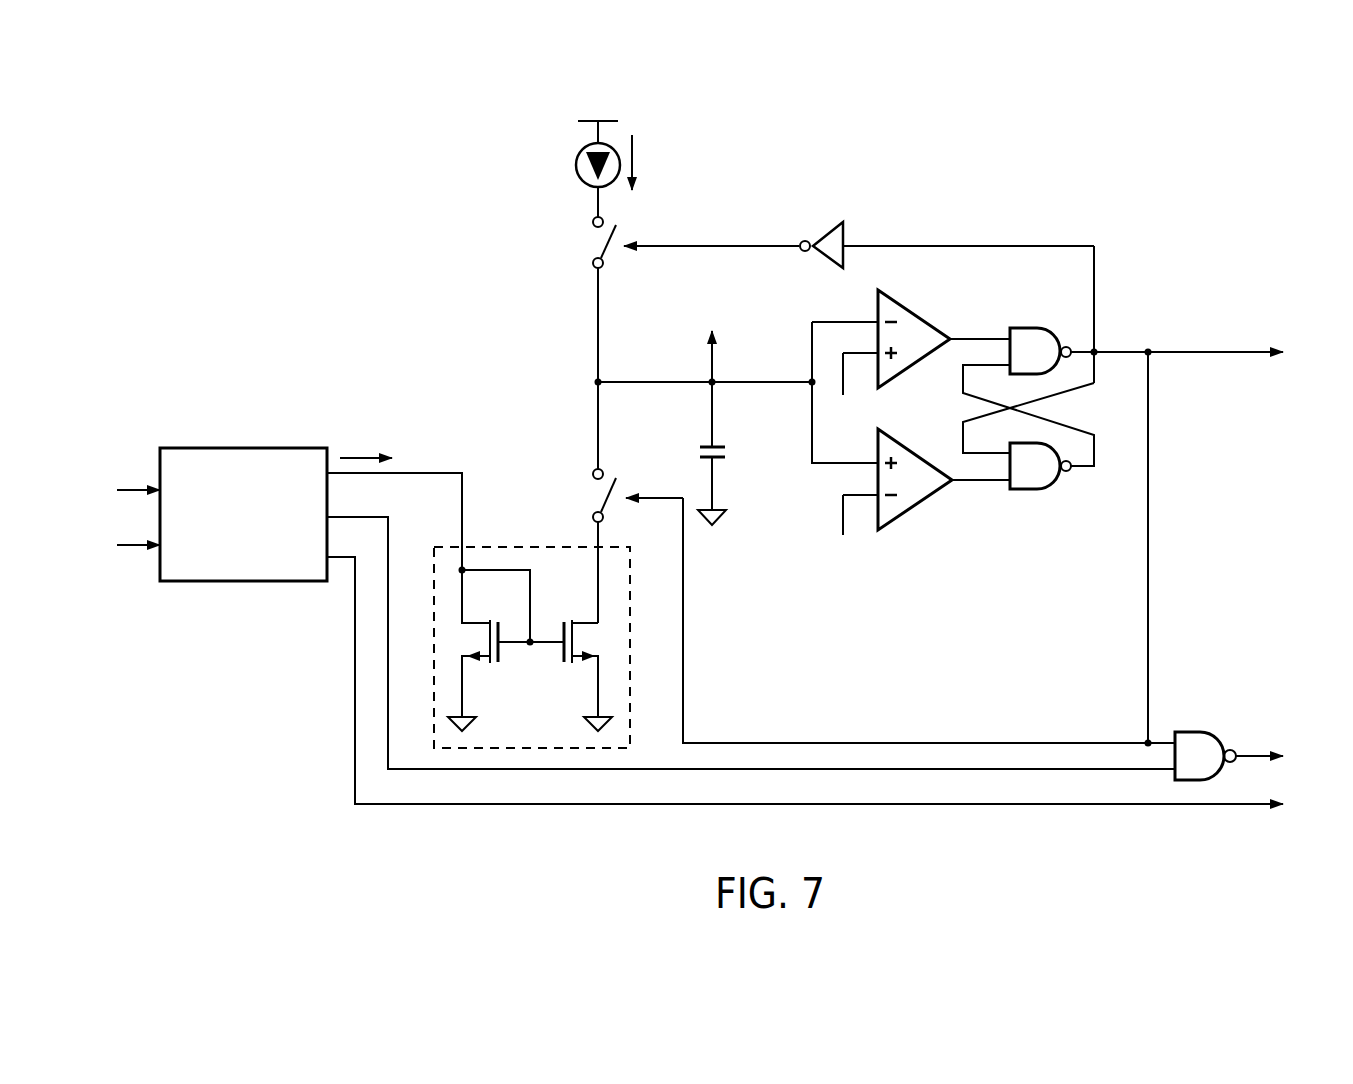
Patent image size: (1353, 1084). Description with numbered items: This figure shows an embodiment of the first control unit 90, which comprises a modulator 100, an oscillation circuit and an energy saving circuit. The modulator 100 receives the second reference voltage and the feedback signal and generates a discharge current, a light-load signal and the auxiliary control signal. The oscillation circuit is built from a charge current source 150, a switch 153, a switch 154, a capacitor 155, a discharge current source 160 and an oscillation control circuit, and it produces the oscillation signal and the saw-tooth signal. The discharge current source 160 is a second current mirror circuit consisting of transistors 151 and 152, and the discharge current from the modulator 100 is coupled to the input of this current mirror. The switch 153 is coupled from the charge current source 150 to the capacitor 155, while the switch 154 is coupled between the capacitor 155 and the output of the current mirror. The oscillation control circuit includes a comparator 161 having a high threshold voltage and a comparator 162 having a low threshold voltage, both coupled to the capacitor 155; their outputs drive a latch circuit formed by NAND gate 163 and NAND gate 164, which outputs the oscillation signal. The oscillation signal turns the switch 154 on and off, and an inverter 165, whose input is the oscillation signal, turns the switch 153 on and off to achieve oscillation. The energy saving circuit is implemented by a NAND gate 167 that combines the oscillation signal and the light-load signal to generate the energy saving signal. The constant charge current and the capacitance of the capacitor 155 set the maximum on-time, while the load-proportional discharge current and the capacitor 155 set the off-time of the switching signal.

The first control unit 90 is at (1240, 138).
The modulator 100 is at (272, 446).
The charge current source 150 is at (575, 167).
The transistor 151 is at (495, 665).
The transistor 152 is at (602, 645).
The switch 153 is at (588, 243).
The switch 154 is at (588, 494).
The capacitor 155 is at (728, 452).
The discharge current source 160 is at (548, 748).
The comparator 161 is at (920, 313).
The comparator 162 is at (915, 508).
The NAND gate 163 is at (1030, 325).
The NAND gate 164 is at (1030, 493).
The inverter 165 is at (822, 220).
The NAND gate 167 is at (1193, 730).